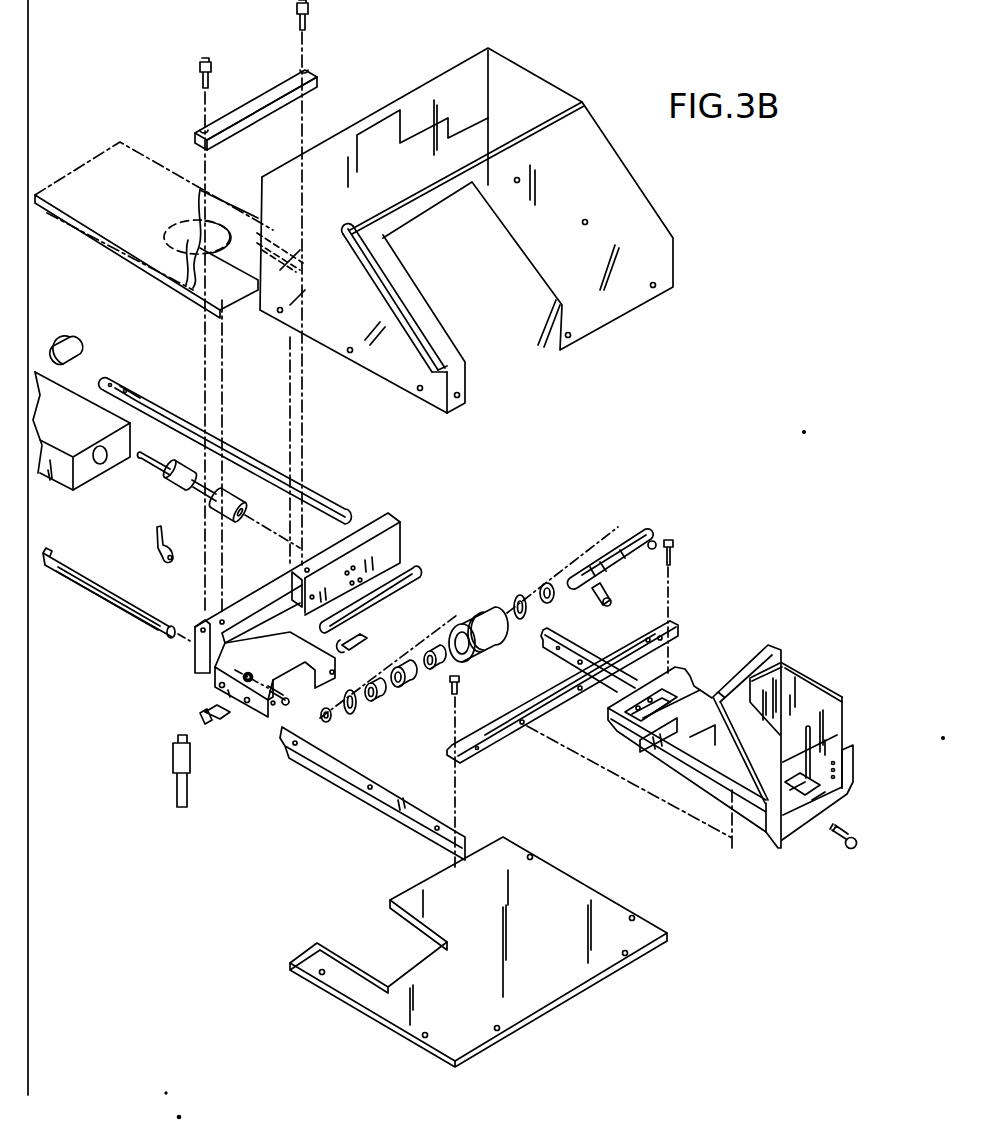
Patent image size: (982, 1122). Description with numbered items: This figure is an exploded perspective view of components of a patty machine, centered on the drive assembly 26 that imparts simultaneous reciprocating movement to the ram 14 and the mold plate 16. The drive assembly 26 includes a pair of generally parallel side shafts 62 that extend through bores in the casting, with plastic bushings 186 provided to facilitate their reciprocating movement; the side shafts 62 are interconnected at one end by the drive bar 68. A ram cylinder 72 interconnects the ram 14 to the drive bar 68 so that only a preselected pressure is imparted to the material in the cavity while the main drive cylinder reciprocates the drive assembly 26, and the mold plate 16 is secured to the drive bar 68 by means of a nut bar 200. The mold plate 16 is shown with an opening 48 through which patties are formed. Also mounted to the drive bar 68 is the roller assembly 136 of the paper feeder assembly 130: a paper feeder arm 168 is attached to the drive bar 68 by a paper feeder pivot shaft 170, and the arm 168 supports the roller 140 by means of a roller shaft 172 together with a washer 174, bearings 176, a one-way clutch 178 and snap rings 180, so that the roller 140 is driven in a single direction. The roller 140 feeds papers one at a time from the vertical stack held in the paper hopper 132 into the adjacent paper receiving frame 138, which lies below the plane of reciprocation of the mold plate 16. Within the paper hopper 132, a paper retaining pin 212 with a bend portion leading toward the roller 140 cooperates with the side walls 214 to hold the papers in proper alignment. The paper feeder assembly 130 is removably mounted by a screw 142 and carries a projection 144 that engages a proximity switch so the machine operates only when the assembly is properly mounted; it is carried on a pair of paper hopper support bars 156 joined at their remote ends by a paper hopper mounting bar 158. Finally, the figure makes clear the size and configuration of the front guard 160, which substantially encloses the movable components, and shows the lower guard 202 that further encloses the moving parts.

The ram 14 is at (73, 403).
The mold plate 16 is at (127, 163).
The drive assembly 26 is at (389, 494).
The opening 48 is at (207, 227).
The side shafts 62 is at (237, 448).
The drive bar 68 is at (387, 540).
The ram cylinder 72 is at (240, 467).
The paper feeder assembly 130 is at (787, 862).
The paper hopper 132 is at (787, 687).
The spring biased roller assembly 136 is at (491, 669).
The paper receiving frame 138 is at (640, 740).
The roller 140 is at (480, 607).
The screw 142 is at (840, 850).
The projection 144 is at (633, 687).
The paper hopper support bars 156 is at (565, 647).
The paper hopper mounting bar 158 is at (648, 622).
The front guard 160 is at (583, 148).
The paper feeder arm 168 is at (270, 653).
The paper feeder pivot shaft 170 is at (397, 600).
The roller shaft 172 is at (617, 543).
The washer 174 is at (520, 598).
The bearings 176 is at (440, 670).
The one-way clutch 178 is at (400, 663).
The snap rings 180 is at (353, 713).
The plastic bushings 186 is at (73, 353).
The nut bar 200 is at (255, 98).
The lower guard 202 is at (562, 975).
The paper retaining pin 212 is at (812, 730).
The side walls 214 is at (737, 687).